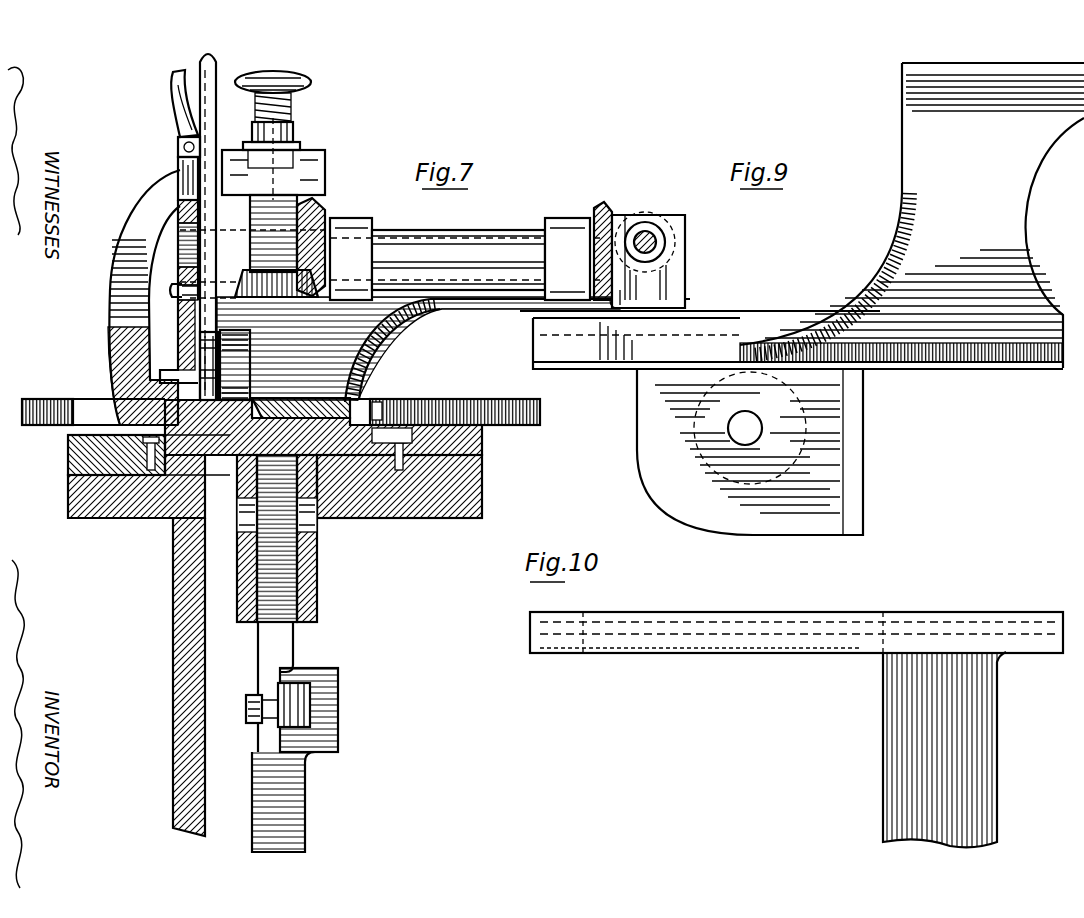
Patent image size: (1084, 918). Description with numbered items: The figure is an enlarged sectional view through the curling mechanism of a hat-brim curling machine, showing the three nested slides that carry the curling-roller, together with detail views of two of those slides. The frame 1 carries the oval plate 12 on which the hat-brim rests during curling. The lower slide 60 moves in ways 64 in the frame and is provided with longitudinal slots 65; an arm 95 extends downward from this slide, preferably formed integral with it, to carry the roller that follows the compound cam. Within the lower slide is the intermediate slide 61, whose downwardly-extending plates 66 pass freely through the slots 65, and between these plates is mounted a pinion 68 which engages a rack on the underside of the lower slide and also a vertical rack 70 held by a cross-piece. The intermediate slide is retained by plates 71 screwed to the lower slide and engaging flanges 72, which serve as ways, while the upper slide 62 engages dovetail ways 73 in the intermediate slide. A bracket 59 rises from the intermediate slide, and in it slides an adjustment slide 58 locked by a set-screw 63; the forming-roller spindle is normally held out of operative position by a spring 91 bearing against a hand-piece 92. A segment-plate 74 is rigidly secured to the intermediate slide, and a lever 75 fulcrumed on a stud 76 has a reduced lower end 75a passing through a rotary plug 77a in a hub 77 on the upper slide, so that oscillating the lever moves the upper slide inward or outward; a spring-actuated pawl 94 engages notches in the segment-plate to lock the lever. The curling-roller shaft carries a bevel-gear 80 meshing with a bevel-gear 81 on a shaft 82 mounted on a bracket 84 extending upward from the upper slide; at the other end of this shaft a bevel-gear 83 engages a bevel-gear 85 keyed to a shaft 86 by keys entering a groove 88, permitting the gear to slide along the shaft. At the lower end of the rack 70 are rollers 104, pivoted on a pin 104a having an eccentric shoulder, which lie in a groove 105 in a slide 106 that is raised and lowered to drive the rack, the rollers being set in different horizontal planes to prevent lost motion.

In FIG. 7, the frame 1 is at (173, 633).
In FIG. 7, the oval plate 12 is at (462, 398).
In FIG. 7, the slide 58 is at (326, 160).
In FIG. 7, the bracket 59 is at (144, 315).
In FIG. 9, the bracket 59 is at (912, 215).
In FIG. 7, the lower slide 60 is at (128, 478).
In FIG. 10, the lower slide 60 is at (796, 632).
In FIG. 7, the intermediate slide 61 is at (323, 427).
In FIG. 7, the upper slide 62 is at (312, 403).
In FIG. 7, the set-screw 63 is at (294, 140).
In FIG. 7, the ways 64 is at (100, 458).
In FIG. 7, the longitudinal slots 65 is at (332, 482).
In FIG. 7, the downwardly-extending plates 66 is at (240, 603).
In FIG. 9, the downwardly-extending plates 66 is at (750, 452).
In FIG. 7, the pinion 68 is at (273, 520).
In FIG. 7, the vertical rack 70 is at (273, 612).
In FIG. 7, the plates 71 is at (404, 430).
In FIG. 7, the flanges 72 is at (152, 478).
In FIG. 7, the dovetail ways 73 is at (380, 402).
In FIG. 7, the segment-plate 74 is at (166, 178).
In FIG. 7, the lever 75 is at (217, 233).
In FIG. 7, the reduced lower end of lever 75a is at (200, 343).
In FIG. 7, the stud 76 is at (174, 292).
In FIG. 7, the hub 77 is at (235, 365).
In FIG. 7, the rotary plug 77a is at (250, 378).
In FIG. 7, the bevel-gear 80 is at (250, 275).
In FIG. 7, the bevel-gear 81 is at (323, 213).
In FIG. 7, the shaft 82 is at (438, 236).
In FIG. 7, the bevel-gear 83 is at (612, 212).
In FIG. 7, the bracket 84 is at (453, 349).
In FIG. 7, the bevel-gear 85 is at (660, 212).
In FIG. 7, the shaft 86 is at (657, 242).
In FIG. 7, the groove 88 is at (660, 228).
In FIG. 7, the spring 91 is at (256, 110).
In FIG. 7, the hand-piece 92 is at (311, 80).
In FIG. 7, the spring-actuated pawl 94 is at (178, 165).
In FIG. 10, the arm 95 is at (944, 749).
In FIG. 7, the rollers 104 is at (297, 683).
In FIG. 7, the pin 104a is at (315, 710).
In FIG. 7, the groove 105 is at (312, 700).
In FIG. 7, the slide 106 is at (300, 826).